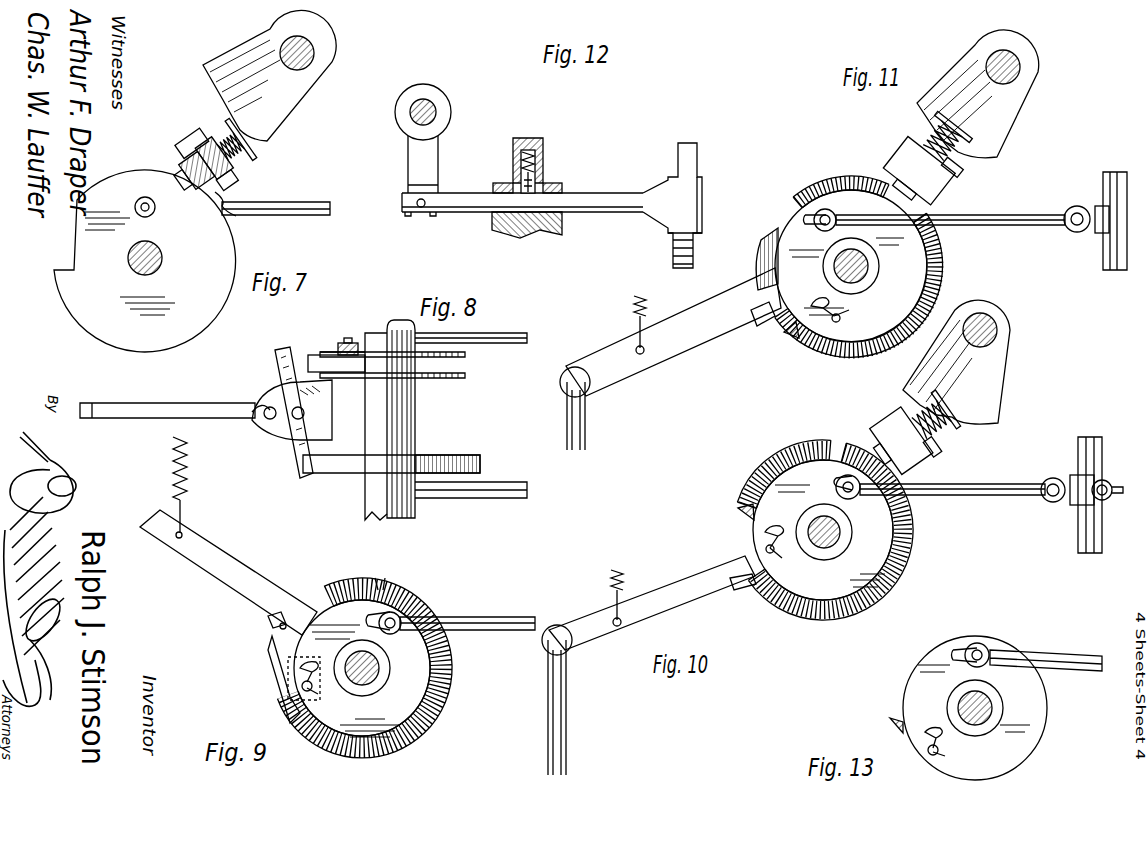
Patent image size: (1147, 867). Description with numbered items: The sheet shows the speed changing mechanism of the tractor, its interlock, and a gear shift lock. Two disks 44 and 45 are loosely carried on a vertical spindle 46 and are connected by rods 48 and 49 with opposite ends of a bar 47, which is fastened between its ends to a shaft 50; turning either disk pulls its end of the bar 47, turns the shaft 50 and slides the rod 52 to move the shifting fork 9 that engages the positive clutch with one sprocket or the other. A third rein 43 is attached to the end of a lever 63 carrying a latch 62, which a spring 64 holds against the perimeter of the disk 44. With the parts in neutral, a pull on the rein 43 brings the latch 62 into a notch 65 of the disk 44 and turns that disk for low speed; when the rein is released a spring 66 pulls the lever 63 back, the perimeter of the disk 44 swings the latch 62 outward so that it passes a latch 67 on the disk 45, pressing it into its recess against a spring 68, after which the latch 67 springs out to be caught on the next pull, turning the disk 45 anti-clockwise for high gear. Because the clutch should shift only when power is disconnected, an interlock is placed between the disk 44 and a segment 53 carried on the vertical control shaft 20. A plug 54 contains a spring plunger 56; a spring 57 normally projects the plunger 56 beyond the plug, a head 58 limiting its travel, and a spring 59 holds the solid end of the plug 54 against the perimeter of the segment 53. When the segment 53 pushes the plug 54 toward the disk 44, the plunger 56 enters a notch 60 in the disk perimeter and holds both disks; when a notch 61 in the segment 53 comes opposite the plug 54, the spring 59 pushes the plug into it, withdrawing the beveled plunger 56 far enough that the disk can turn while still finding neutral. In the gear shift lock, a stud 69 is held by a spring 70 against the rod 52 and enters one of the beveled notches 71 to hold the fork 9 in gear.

In FIG. 12, the shifting fork 9 is at (702, 186).
In FIG. 7, the vertical shaft 20 is at (326, 58).
In FIG. 11, the vertical shaft 20 is at (1032, 70).
In FIG. 10, the vertical shaft 20 is at (998, 325).
In FIG. 11, the third rein 43 is at (586, 424).
In FIG. 10, the third rein 43 is at (568, 740).
In FIG. 7, the disk 44 is at (196, 326).
In FIG. 8, the disk 44 is at (478, 456).
In FIG. 11, the disk 44 is at (826, 348).
In FIG. 10, the disk 44 is at (905, 570).
In FIG. 9, the disk 44 is at (428, 590).
In FIG. 13, the disk 44 is at (975, 708).
In FIG. 8, the disk 45 is at (328, 355).
In FIG. 11, the disk 45 is at (924, 292).
In FIG. 10, the disk 45 is at (885, 605).
In FIG. 9, the disk 45 is at (435, 692).
In FIG. 13, the disk 45 is at (918, 685).
In FIG. 7, the vertical spindle 46 is at (128, 262).
In FIG. 8, the vertical spindle 46 is at (402, 322).
In FIG. 11, the vertical spindle 46 is at (868, 266).
In FIG. 10, the vertical spindle 46 is at (842, 534).
In FIG. 9, the vertical spindle 46 is at (380, 668).
In FIG. 13, the vertical spindle 46 is at (992, 708).
In FIG. 11, the bar 47 is at (1090, 238).
In FIG. 10, the bar 47 is at (1115, 500).
In FIG. 7, the rod 48 is at (330, 210).
In FIG. 8, the rod 48 is at (530, 486).
In FIG. 8, the rod 49 is at (527, 340).
In FIG. 11, the rod 49 is at (1022, 222).
In FIG. 10, the rod 49 is at (1005, 490).
In FIG. 9, the rod 49 is at (487, 620).
In FIG. 13, the rod 49 is at (1045, 652).
In FIG. 12, the shaft 50 is at (433, 100).
In FIG. 11, the shaft 50 is at (1112, 245).
In FIG. 10, the shaft 50 is at (1080, 525).
In FIG. 12, the rod 52 is at (622, 200).
In FIG. 7, the segment 53 is at (308, 93).
In FIG. 11, the segment 53 is at (1018, 108).
In FIG. 10, the segment 53 is at (1005, 372).
In FIG. 7, the plug 54 is at (241, 139).
In FIG. 11, the plug 54 is at (954, 126).
In FIG. 10, the plug 54 is at (945, 409).
In FIG. 7, the spring plunger 56 is at (193, 174).
In FIG. 11, the spring plunger 56 is at (930, 132).
In FIG. 10, the spring plunger 56 is at (925, 428).
In FIG. 7, the spring 57 is at (217, 164).
In FIG. 7, the head 58 is at (218, 112).
In FIG. 7, the spring 59 is at (231, 147).
In FIG. 11, the spring 59 is at (942, 141).
In FIG. 10, the spring 59 is at (931, 419).
In FIG. 7, the notch 60 is at (232, 212).
In FIG. 11, the notch 60 is at (920, 226).
In FIG. 10, the notch 60 is at (833, 448).
In FIG. 9, the notch 60 is at (380, 590).
In FIG. 7, the notch 61 is at (220, 103).
In FIG. 11, the notch 61 is at (928, 125).
In FIG. 10, the notch 61 is at (955, 430).
In FIG. 8, the latch 62 is at (278, 375).
In FIG. 11, the latch 62 is at (760, 322).
In FIG. 10, the latch 62 is at (745, 588).
In FIG. 9, the latch 62 is at (270, 625).
In FIG. 8, the lever 63 is at (133, 404).
In FIG. 11, the lever 63 is at (650, 372).
In FIG. 10, the lever 63 is at (670, 590).
In FIG. 9, the lever 63 is at (230, 560).
In FIG. 8, the spring 64 is at (282, 430).
In FIG. 7, the notch 65 is at (70, 270).
In FIG. 11, the notch 65 is at (773, 232).
In FIG. 9, the notch 65 is at (285, 718).
In FIG. 11, the spring 66 is at (637, 326).
In FIG. 10, the spring 66 is at (614, 600).
In FIG. 9, the spring 66 is at (190, 462).
In FIG. 8, the latch 67 is at (308, 352).
In FIG. 11, the latch 67 is at (792, 338).
In FIG. 10, the latch 67 is at (742, 512).
In FIG. 9, the latch 67 is at (285, 665).
In FIG. 13, the latch 67 is at (895, 722).
In FIG. 8, the spring 68 is at (352, 341).
In FIG. 11, the spring 68 is at (826, 302).
In FIG. 10, the spring 68 is at (785, 558).
In FIG. 9, the spring 68 is at (300, 683).
In FIG. 13, the spring 68 is at (948, 752).
In FIG. 12, the stud 69 is at (545, 174).
In FIG. 12, the spring 70 is at (543, 150).
In FIG. 12, the notches 71 is at (500, 192).